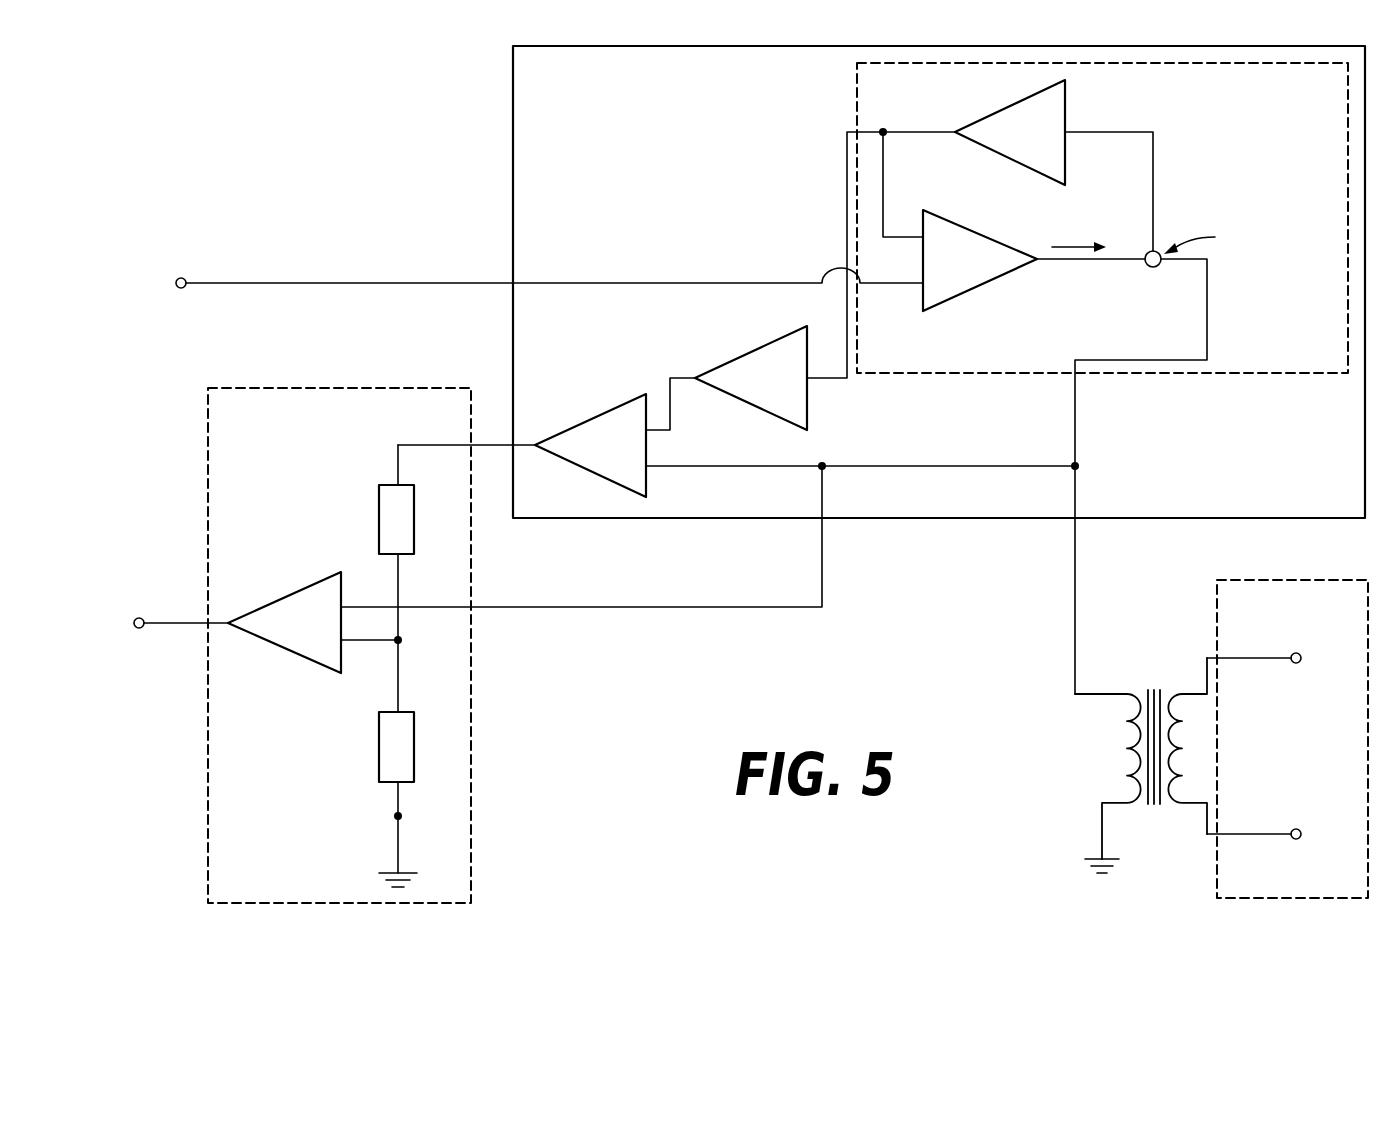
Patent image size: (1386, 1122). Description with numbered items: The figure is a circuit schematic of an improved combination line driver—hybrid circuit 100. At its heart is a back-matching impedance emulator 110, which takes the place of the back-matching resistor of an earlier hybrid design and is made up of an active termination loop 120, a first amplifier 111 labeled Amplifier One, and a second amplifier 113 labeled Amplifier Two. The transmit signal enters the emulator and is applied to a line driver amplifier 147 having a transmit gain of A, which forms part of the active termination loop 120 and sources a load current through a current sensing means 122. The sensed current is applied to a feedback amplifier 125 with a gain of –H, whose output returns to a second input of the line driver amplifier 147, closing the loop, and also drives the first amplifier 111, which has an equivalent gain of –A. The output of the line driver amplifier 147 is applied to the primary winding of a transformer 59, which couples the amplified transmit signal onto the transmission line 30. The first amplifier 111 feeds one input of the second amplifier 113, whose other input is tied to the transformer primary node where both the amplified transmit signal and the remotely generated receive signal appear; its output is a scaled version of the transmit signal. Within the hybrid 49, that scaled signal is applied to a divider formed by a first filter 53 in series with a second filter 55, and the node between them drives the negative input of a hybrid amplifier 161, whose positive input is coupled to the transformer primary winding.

The combination line driver—hybrid circuit 100 is at (385, 76).
The back-matching impedance emulator 110 is at (513, 100).
The active termination loop 120 is at (857, 95).
The feedback amplifier 125 is at (1066, 105).
The line driver amplifier 147 is at (954, 223).
The current sensing means 122 is at (1153, 268).
The first amplifier 111 is at (808, 398).
The second amplifier 113 is at (647, 483).
The hybrid 49 is at (275, 388).
The first filter 53 is at (379, 520).
The second filter 55 is at (379, 748).
The hybrid amplifier 161 is at (312, 665).
The transformer 59 is at (1133, 770).
The transmission line 30 is at (1258, 580).